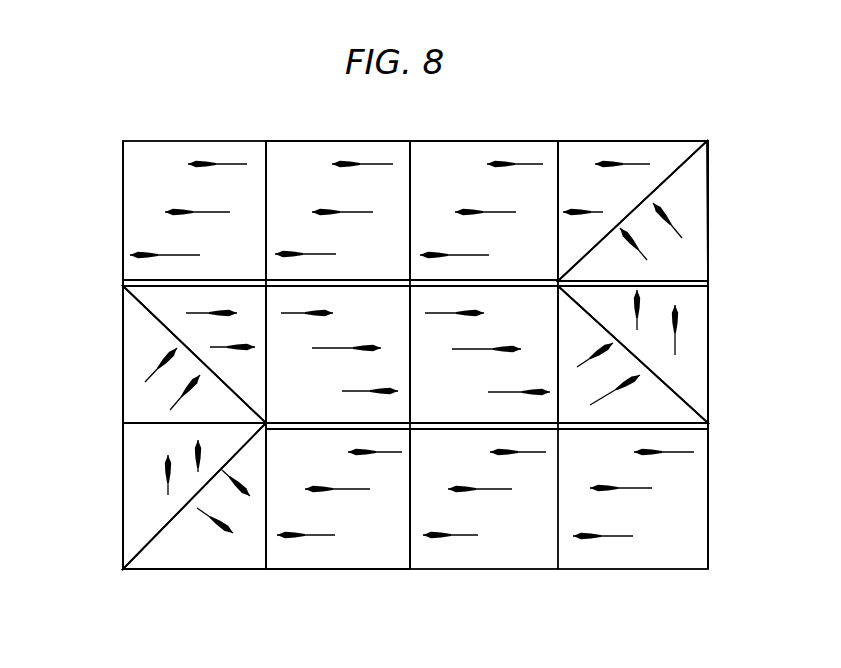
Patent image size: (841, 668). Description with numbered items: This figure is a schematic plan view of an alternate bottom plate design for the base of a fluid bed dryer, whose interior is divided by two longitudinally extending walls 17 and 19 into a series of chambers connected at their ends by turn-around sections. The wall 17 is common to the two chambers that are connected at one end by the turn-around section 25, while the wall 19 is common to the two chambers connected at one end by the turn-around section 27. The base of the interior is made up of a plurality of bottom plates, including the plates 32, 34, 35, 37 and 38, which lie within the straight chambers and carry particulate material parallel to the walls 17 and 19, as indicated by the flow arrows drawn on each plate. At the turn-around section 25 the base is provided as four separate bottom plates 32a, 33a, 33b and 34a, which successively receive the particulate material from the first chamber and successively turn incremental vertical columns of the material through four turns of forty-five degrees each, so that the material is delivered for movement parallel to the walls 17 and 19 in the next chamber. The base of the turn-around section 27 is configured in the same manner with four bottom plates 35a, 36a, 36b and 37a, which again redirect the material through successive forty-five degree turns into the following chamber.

The longitudinally extending wall 17 is at (705, 432).
The longitudinally extending wall 19 is at (147, 278).
The turn-around section 25 is at (90, 420).
The turn-around section 27 is at (735, 267).
The bottom plate 32 is at (385, 559).
The bottom plate 32a is at (212, 550).
The bottom plate 33a is at (143, 484).
The bottom plate 33b is at (143, 355).
The bottom plate 34 is at (382, 328).
The bottom plate 34a is at (246, 342).
The bottom plate 35 is at (528, 324).
The bottom plate 35a is at (672, 417).
The bottom plate 36a is at (700, 330).
The bottom plate 36b is at (700, 216).
The bottom plate 37 is at (543, 116).
The bottom plate 37a is at (650, 152).
The bottom plate 38 is at (303, 165).